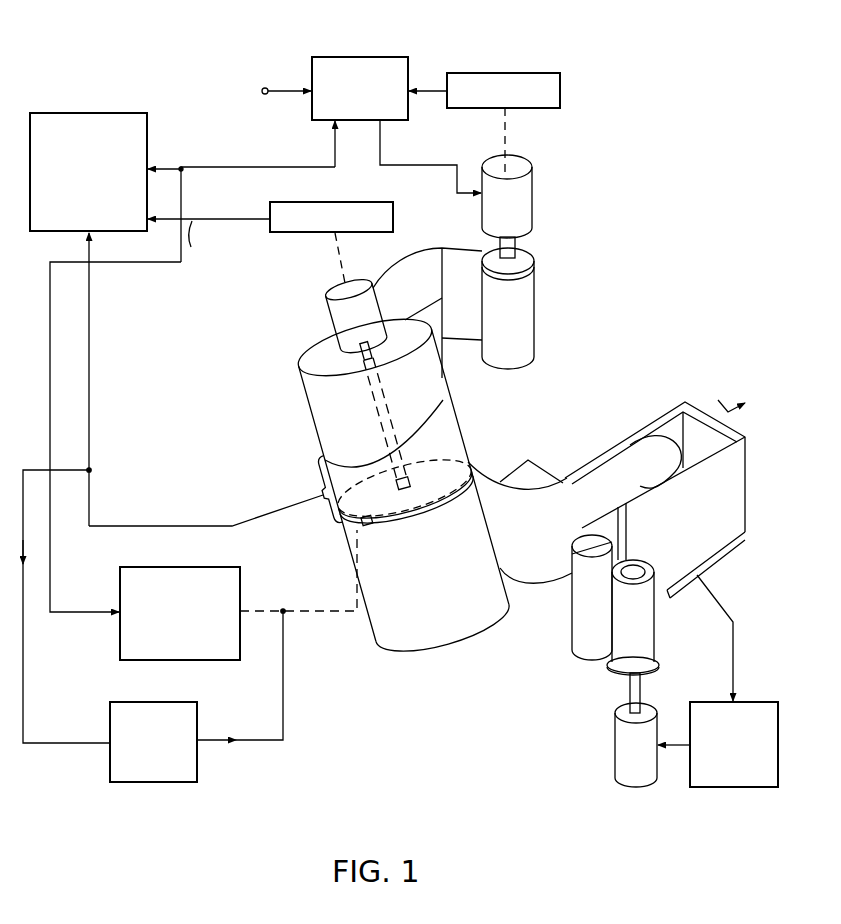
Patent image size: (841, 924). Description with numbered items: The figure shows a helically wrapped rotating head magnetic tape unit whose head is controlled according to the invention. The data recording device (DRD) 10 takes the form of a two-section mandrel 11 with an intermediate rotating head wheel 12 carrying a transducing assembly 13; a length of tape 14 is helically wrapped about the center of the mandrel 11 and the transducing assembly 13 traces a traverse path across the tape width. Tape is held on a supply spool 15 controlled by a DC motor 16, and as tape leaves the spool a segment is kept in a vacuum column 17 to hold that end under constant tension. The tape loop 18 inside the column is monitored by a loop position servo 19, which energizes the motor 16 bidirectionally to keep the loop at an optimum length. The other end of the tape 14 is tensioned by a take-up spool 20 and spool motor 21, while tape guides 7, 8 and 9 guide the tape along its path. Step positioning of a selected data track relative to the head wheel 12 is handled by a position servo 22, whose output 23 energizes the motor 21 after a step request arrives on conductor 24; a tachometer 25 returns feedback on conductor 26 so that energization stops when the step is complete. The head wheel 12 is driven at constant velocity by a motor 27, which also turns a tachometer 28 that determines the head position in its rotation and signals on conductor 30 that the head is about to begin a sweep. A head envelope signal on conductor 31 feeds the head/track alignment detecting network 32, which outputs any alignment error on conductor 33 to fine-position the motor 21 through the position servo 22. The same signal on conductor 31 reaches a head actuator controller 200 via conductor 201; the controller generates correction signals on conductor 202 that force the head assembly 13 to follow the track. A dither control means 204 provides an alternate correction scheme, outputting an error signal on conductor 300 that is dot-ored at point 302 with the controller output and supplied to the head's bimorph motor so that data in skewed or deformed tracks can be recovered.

The tape guide 7 is at (592, 559).
The tape guide 8 is at (535, 486).
The tape guide 9 is at (418, 297).
The data recording device (DRD) 10 is at (381, 479).
The mandrel 11 is at (457, 418).
The rotating head wheel 12 is at (445, 505).
The transducing assembly 13 is at (372, 528).
The tape 14 is at (361, 462).
The supply spool 15 is at (662, 620).
The DC motor 16 is at (615, 755).
The vacuum column 17 is at (745, 485).
The tape loop 18 is at (647, 437).
The loop position servo 19 is at (759, 701).
The take-up spool 20 is at (534, 298).
The spool motor 21 is at (532, 193).
The position servo 22 is at (350, 57).
The output 23 is at (418, 161).
The conductor 24 is at (287, 90).
The tachometer 25 is at (520, 73).
The conductor 26 is at (422, 90).
The motor 27 is at (329, 316).
The tachometer 28 is at (337, 202).
The conductor 30 is at (247, 217).
The conductor 31 is at (89, 308).
The head/track alignment detecting network 32 is at (123, 112).
The conductor 33 is at (163, 167).
The head actuator controller 200 is at (241, 580).
The conductor 201 is at (50, 447).
The conductor 202 is at (356, 563).
The dither control means 204 is at (198, 772).
The conductor 300 is at (283, 722).
The point 302 is at (283, 610).